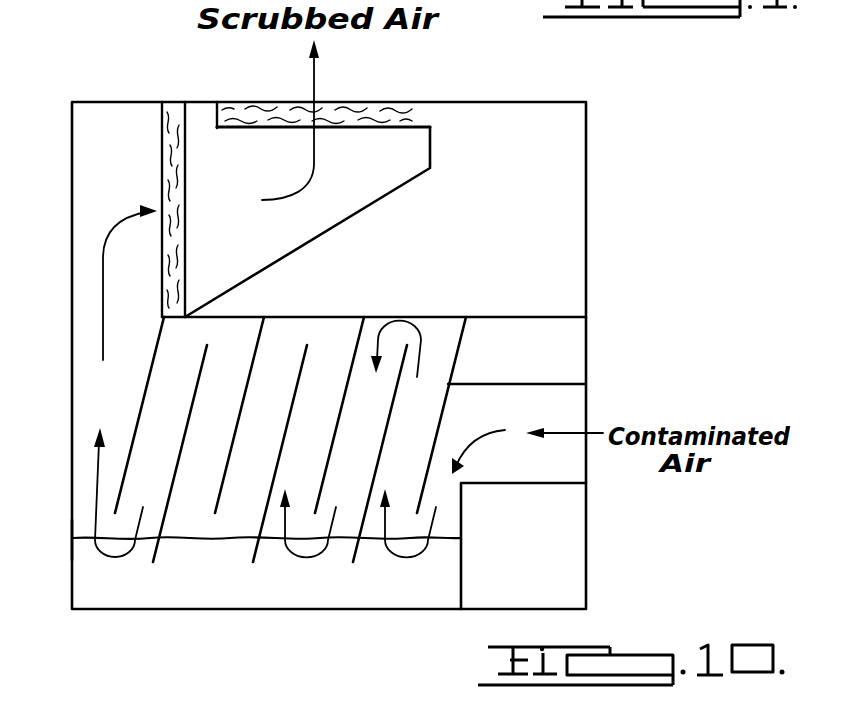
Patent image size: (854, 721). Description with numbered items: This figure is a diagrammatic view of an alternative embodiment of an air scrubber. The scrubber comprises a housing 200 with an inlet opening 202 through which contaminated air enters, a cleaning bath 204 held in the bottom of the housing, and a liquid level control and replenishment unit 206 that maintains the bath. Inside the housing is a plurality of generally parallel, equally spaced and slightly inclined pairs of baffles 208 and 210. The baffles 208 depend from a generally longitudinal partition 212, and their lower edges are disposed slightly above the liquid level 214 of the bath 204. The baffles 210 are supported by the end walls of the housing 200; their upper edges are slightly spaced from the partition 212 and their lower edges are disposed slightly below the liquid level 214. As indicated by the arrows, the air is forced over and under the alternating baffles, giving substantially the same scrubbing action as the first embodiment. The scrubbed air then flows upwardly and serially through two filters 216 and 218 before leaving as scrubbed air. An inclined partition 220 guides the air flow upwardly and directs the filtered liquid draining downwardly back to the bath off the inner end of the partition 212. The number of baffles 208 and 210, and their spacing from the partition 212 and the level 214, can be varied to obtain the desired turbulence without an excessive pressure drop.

The housing 200 is at (588, 170).
The inlet opening 202 is at (588, 386).
The cleaning bath 204 is at (300, 592).
The liquid level control and replenishment unit 206 is at (563, 573).
The baffles 208 is at (140, 406).
The baffles 210 is at (378, 458).
The longitudinal partition 212 is at (588, 309).
The liquid level 214 is at (84, 536).
The filter 216 is at (160, 161).
The filter 218 is at (386, 106).
The inclined partition 220 is at (369, 204).